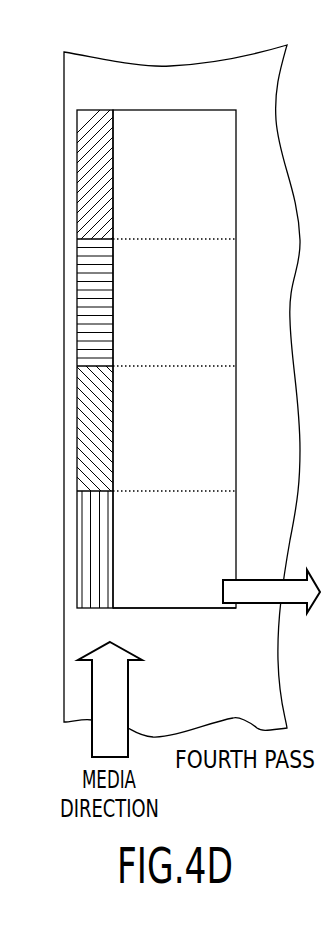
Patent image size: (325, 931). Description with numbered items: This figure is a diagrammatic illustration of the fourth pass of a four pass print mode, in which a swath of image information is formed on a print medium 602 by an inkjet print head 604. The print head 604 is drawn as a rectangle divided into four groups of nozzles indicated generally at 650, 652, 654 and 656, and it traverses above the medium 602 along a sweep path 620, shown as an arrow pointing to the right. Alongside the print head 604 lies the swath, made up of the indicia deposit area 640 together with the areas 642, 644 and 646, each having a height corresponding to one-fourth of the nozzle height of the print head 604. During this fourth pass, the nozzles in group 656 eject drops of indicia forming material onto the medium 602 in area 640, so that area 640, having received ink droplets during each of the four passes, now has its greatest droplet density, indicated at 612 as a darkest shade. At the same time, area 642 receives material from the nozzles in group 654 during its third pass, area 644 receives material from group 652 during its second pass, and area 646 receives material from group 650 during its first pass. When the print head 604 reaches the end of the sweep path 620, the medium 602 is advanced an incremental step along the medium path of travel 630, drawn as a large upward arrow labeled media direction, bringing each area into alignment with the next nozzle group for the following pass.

The print medium 602 is at (75, 84).
The inkjet print head 604 is at (145, 111).
The indicia deposit area 640 is at (72, 157).
The darkest shade ink droplet density 612 is at (85, 182).
The indicia deposit area 642 is at (85, 302).
The indicia deposit area 644 is at (85, 432).
The indicia deposit area 646 is at (85, 548).
The print head nozzle group 656 is at (190, 186).
The print head nozzle group 654 is at (190, 319).
The print head nozzle group 652 is at (190, 441).
The print head nozzle group 650 is at (190, 562).
The sweep path 620 is at (263, 593).
The medium path of travel 630 is at (116, 690).